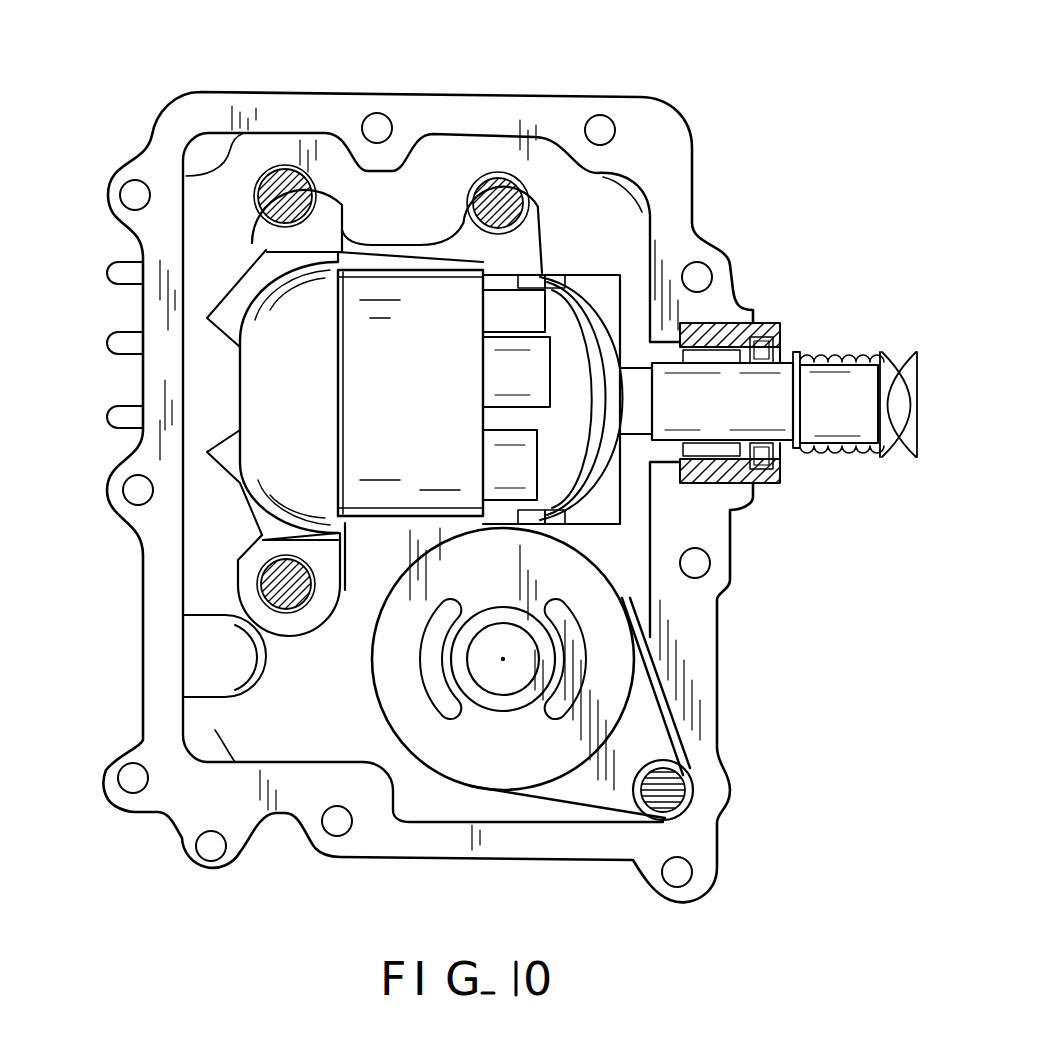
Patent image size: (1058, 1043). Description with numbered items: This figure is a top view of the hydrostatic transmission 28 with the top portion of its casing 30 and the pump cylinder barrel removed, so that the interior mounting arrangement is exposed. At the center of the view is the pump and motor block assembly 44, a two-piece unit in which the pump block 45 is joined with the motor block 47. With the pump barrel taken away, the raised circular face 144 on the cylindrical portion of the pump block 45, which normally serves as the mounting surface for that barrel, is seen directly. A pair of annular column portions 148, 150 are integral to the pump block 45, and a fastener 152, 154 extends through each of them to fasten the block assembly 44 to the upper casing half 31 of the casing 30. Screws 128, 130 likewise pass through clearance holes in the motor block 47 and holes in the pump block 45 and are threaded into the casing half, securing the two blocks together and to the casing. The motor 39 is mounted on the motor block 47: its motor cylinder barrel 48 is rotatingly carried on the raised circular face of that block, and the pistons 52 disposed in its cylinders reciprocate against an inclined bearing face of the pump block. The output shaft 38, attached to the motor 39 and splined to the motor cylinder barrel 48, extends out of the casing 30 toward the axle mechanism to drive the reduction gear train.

The hydrostatic transmission module 28 is at (440, 72).
The casing 30 is at (653, 100).
The upper casing half 31 is at (153, 677).
The output shaft 38 is at (773, 383).
The motor 39 is at (280, 318).
The pump and motor block assembly 44 is at (552, 250).
The pump block 45 is at (627, 605).
The motor block 47 is at (258, 387).
The motor cylinder barrel 48 is at (423, 393).
The pistons 52 is at (497, 313).
The screw 128 is at (285, 178).
The screw 130 is at (277, 608).
The raised circular face 144 is at (477, 770).
The annular column portion 148 is at (501, 163).
The annular column portion 150 is at (677, 768).
The fastener 152 is at (514, 186).
The fastener 154 is at (682, 788).